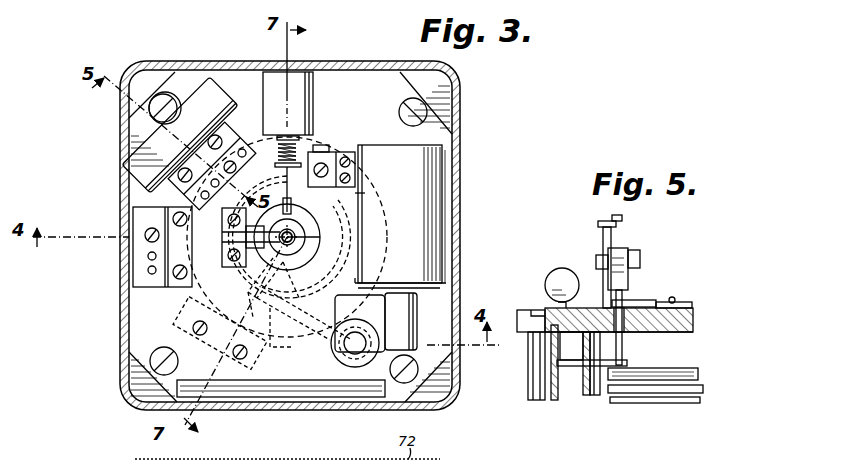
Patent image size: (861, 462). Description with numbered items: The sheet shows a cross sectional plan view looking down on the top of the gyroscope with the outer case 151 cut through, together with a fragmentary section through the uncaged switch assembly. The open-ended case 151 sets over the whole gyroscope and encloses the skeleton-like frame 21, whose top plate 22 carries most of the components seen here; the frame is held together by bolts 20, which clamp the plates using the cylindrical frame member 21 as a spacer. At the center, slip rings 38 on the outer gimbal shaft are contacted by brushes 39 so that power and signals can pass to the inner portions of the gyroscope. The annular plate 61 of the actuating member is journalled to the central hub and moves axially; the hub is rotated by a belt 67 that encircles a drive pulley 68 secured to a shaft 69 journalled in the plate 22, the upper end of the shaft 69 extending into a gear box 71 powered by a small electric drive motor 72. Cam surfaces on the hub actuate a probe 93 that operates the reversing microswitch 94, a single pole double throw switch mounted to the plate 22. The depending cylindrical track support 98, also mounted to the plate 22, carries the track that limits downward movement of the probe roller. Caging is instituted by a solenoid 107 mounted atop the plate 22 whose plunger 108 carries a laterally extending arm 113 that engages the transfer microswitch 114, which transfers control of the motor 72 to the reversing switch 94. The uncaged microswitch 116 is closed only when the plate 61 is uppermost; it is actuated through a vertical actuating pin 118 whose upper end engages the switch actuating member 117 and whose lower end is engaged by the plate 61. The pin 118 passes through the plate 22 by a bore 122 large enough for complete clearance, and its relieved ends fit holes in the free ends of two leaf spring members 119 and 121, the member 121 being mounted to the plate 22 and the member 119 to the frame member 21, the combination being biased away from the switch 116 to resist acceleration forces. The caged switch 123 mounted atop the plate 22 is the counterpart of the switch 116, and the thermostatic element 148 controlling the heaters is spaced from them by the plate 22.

In FIG. 3, the bolts 20 is at (427, 124).
In FIG. 5, the bolts 20 is at (536, 360).
In FIG. 5, the cylindrical frame member 21 is at (550, 385).
In FIG. 3, the top plate 22 is at (140, 300).
In FIG. 5, the top plate 22 is at (692, 312).
In FIG. 3, the slip rings 38 is at (302, 237).
In FIG. 3, the brushes 39 is at (240, 235).
In FIG. 3, the annular plate 61 is at (383, 252).
In FIG. 5, the annular plate 61 is at (691, 370).
In FIG. 3, the belt 67 is at (274, 311).
In FIG. 3, the drive pulley 68 is at (380, 312).
In FIG. 3, the shaft 69 is at (340, 350).
In FIG. 3, the gear box 71 is at (342, 312).
In FIG. 3, the electric drive motor 72 is at (400, 216).
In FIG. 3, the switch actuating probe 93 is at (250, 293).
In FIG. 3, the reversing microswitch 94 is at (200, 312).
In FIG. 5, the track support 98 is at (589, 396).
In FIG. 3, the solenoid 107 is at (300, 86).
In FIG. 3, the plunger 108 is at (355, 199).
In FIG. 3, the laterally extending arm 113 is at (302, 138).
In FIG. 3, the transfer microswitch 114 is at (330, 158).
In FIG. 3, the uncaged microswitch 116 is at (237, 138).
In FIG. 5, the uncaged microswitch 116 is at (626, 262).
In FIG. 5, the actuating member 117 is at (628, 300).
In FIG. 5, the actuating pin 118 is at (623, 345).
In FIG. 5, the leaf spring member 119 is at (584, 370).
In FIG. 5, the leaf spring member 121 is at (662, 304).
In FIG. 5, the bore 122 is at (695, 323).
In FIG. 3, the caged switch 123 is at (131, 260).
In FIG. 3, the thermostatic element 148 is at (206, 96).
In FIG. 5, the thermostatic element 148 is at (560, 277).
In FIG. 3, the case 151 is at (452, 213).